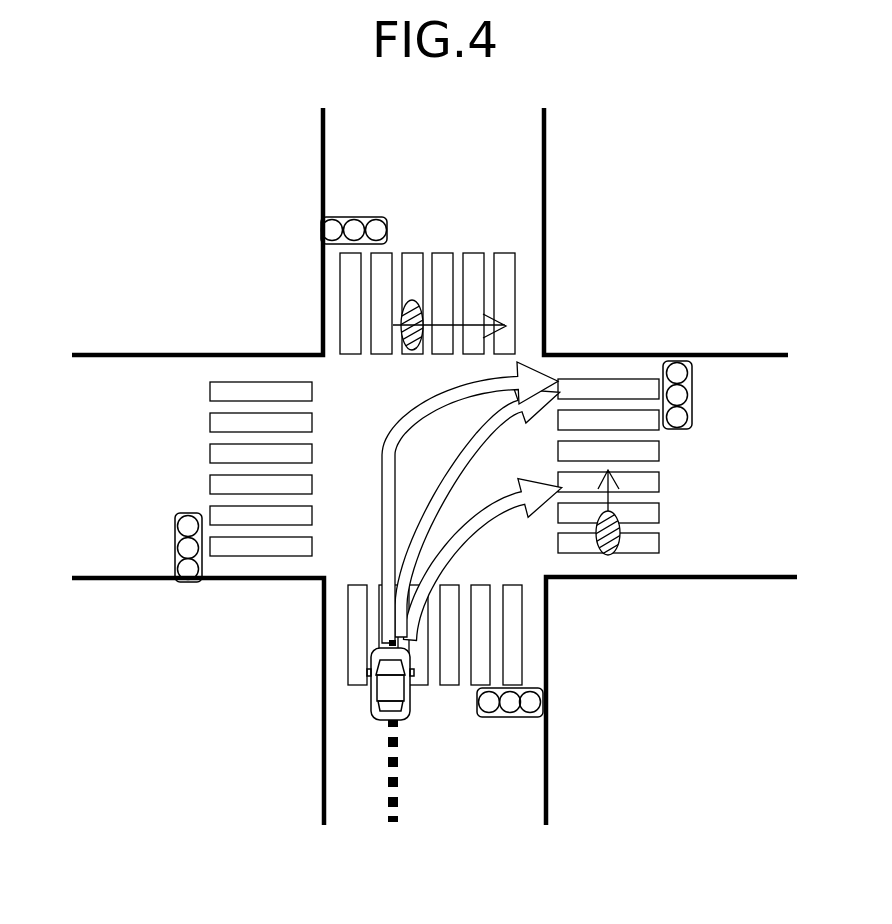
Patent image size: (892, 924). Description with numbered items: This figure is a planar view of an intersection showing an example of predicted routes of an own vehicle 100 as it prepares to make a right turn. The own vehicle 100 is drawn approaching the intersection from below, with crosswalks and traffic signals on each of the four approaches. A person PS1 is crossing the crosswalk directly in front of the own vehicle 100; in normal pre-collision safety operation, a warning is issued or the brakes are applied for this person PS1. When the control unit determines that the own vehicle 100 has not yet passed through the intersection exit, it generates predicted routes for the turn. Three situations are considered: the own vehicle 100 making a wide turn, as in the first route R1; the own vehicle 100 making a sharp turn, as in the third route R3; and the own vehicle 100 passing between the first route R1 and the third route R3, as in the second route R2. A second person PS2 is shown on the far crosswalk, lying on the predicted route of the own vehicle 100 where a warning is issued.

The own vehicle 100 is at (410, 703).
The person PS1 is at (417, 303).
The person PS2 is at (614, 512).
The first route R1 is at (438, 400).
The second route R2 is at (427, 478).
The third route R3 is at (475, 510).